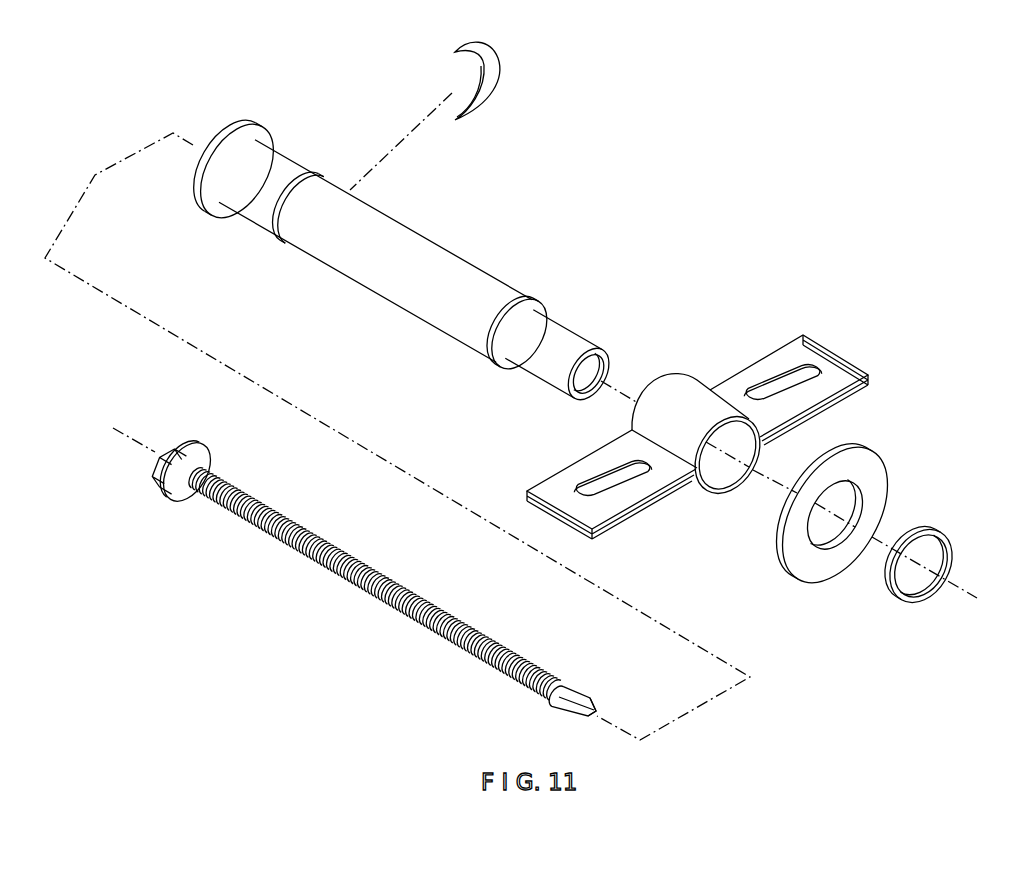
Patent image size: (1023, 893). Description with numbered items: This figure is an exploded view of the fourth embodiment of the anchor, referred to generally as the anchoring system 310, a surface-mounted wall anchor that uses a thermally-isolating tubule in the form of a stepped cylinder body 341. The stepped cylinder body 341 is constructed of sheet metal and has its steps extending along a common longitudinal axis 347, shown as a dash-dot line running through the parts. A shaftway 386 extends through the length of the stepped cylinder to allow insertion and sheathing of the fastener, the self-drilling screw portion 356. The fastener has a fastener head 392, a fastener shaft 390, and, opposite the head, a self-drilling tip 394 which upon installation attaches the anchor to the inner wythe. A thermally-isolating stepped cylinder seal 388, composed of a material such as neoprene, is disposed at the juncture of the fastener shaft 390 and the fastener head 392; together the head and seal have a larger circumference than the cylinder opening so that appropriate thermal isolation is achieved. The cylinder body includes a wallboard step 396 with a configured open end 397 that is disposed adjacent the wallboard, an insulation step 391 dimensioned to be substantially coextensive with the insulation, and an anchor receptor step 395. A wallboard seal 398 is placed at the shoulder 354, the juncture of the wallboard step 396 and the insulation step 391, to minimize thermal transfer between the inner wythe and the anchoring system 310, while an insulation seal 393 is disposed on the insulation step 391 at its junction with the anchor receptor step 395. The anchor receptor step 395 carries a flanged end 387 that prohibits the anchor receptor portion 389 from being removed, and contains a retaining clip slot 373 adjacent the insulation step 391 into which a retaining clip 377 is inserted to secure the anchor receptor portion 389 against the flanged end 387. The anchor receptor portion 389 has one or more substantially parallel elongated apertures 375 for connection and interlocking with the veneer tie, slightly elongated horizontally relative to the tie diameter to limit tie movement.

The anchor 310 is at (509, 174).
The stepped cylinder body 341 is at (403, 314).
The common longitudinal axis 347 is at (300, 396).
The shoulder 354 is at (553, 310).
The self-drilling screw portion 356 is at (563, 687).
The retaining clip slot 373 is at (306, 182).
The elongated apertures 375 is at (778, 390).
The retaining clip 377 is at (498, 82).
The shaftway 386 is at (598, 395).
The flanged end 387 is at (240, 121).
The stepped cylinder seal 388 is at (207, 459).
The anchor receptor portion 389 is at (697, 437).
The fastener shaft 390 is at (340, 547).
The insulation step 391 is at (364, 251).
The fastener head 392 is at (168, 445).
The insulation seal 393 is at (887, 480).
The self-drilling tip 394 is at (587, 720).
The anchor receptor step 395 is at (264, 229).
The wallboard step 396 is at (573, 329).
The configured open end 397 is at (606, 365).
The wallboard seal 398 is at (952, 548).